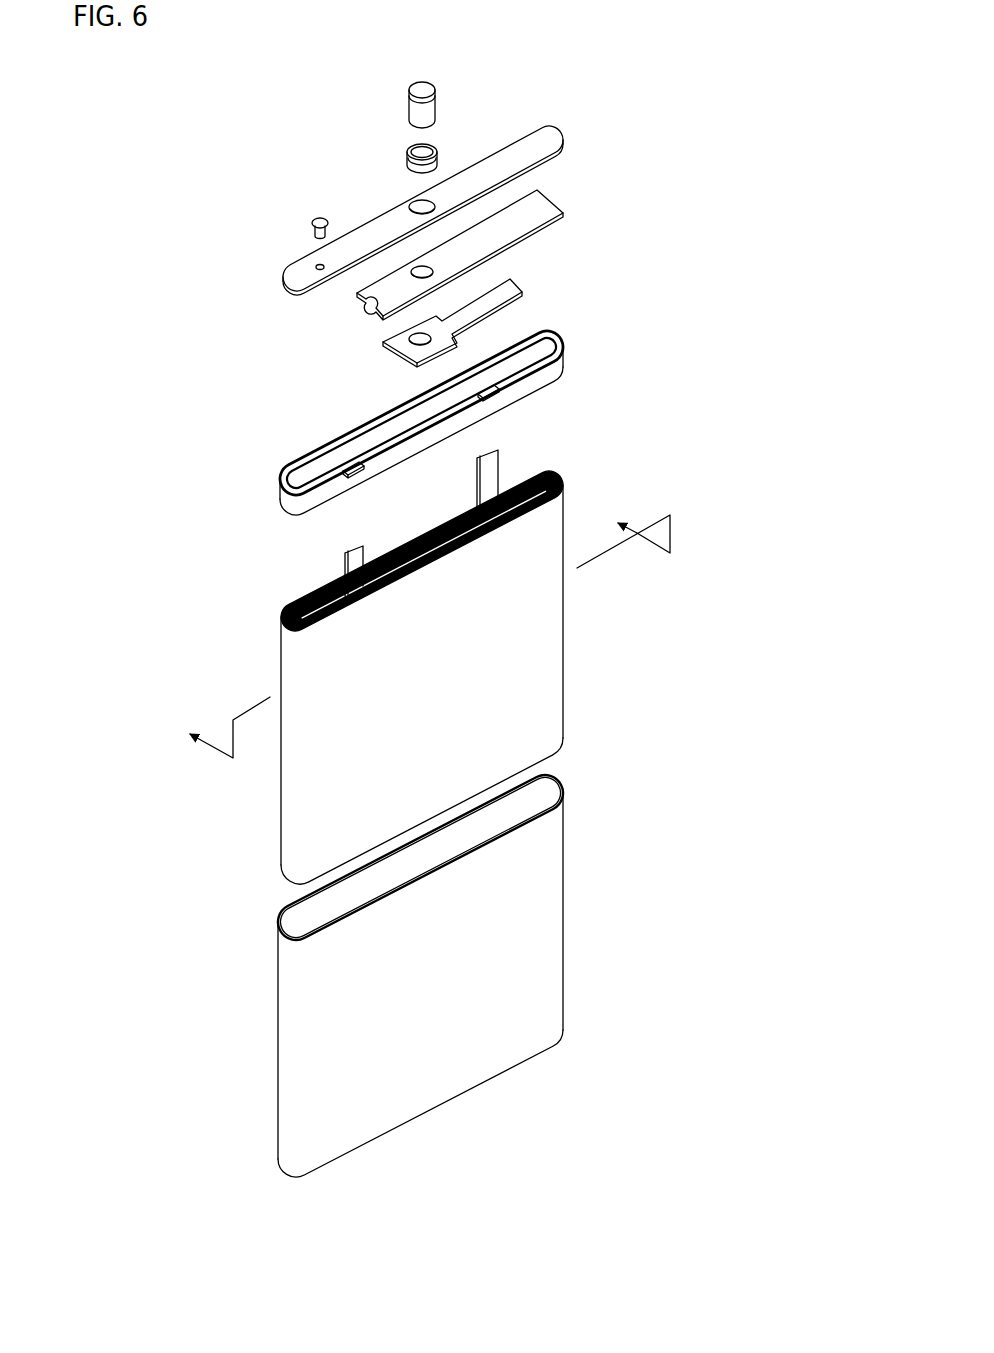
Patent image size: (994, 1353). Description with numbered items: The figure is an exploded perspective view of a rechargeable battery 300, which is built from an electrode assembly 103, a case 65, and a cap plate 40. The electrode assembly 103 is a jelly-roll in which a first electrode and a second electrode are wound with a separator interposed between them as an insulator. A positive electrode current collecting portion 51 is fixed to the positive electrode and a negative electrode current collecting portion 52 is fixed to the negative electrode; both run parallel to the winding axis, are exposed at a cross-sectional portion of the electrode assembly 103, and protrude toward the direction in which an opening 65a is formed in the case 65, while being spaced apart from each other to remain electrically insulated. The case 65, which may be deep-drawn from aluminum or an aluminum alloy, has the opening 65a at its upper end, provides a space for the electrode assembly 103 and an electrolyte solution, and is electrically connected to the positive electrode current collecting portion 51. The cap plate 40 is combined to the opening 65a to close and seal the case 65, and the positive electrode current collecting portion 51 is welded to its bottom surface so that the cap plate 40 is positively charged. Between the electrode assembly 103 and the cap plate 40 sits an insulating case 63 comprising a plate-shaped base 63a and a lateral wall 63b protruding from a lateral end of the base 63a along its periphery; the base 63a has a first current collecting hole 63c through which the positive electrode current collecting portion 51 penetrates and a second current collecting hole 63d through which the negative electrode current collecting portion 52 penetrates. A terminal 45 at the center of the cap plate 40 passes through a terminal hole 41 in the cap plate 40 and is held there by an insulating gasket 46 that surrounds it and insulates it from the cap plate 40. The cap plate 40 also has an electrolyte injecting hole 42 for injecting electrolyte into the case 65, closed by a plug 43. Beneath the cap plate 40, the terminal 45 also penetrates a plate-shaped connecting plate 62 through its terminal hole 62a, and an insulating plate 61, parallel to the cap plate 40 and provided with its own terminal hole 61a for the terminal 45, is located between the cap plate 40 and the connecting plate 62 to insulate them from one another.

The rechargeable battery 300 is at (454, 62).
The cap plate 40 is at (412, 182).
The terminal hole 41 is at (428, 205).
The electrolyte injecting hole 42 is at (314, 263).
The plug 43 is at (313, 219).
The terminal 45 is at (409, 83).
The insulating gasket 46 is at (409, 152).
The positive electrode current collecting portion 51 is at (345, 560).
The negative electrode current collecting portion 52 is at (477, 478).
The insulating plate 61 is at (486, 247).
The terminal hole 61a is at (433, 273).
The connecting plate 62 is at (447, 322).
The terminal hole 62a is at (417, 324).
The insulating case 63 is at (443, 406).
The base 63a is at (317, 476).
The lateral wall 63b is at (545, 338).
The first current collecting hole 63c is at (361, 473).
The second current collecting hole 63d is at (495, 396).
The case 65 is at (426, 976).
The opening 65a is at (294, 930).
The electrode assembly 103 is at (447, 642).